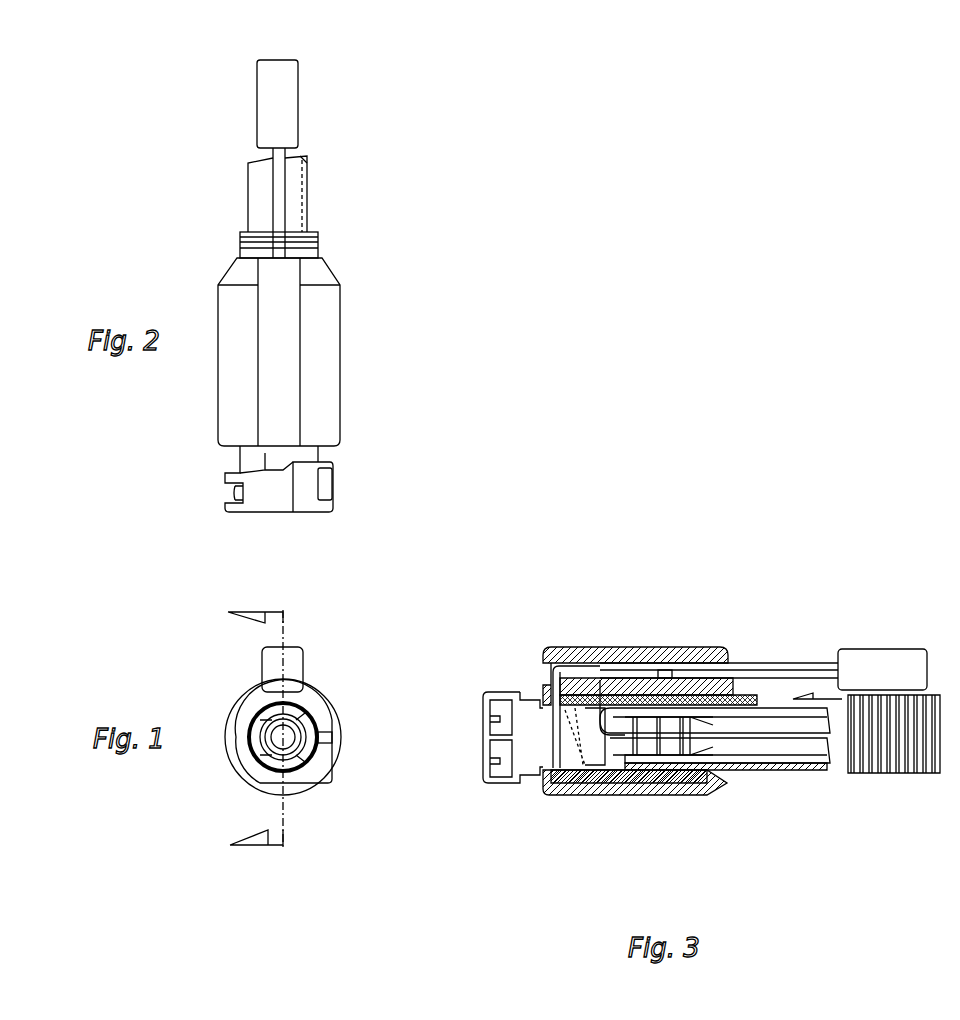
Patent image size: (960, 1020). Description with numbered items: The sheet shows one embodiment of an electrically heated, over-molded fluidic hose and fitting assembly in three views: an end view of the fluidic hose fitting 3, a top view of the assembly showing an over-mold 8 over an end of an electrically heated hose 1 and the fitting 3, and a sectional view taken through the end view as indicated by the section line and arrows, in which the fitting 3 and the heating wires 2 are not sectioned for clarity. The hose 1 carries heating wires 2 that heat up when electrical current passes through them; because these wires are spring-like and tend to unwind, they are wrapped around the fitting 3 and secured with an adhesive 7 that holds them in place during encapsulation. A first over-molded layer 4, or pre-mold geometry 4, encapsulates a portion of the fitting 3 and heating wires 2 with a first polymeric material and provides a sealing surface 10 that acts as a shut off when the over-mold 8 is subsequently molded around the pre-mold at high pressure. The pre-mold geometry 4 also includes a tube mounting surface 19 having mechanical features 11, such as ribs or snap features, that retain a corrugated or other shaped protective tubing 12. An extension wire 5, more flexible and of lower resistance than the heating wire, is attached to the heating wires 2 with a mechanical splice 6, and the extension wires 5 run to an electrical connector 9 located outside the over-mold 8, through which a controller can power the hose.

In FIG. 2, the electrically heated hose 1 is at (260, 212).
In FIG. 3, the electrically heated hose 1 is at (810, 772).
In FIG. 2, the heating wires 2 is at (300, 157).
In FIG. 3, the heating wires 2 is at (583, 795).
In FIG. 2, the fluidic hose fitting 3 is at (333, 486).
In FIG. 1, the fluidic hose fitting 3 is at (247, 703).
In FIG. 3, the fluidic hose fitting 3 is at (510, 690).
In FIG. 3, the first over-molded layer 4 is at (667, 795).
In FIG. 2, the extension wire 5 is at (277, 210).
In FIG. 3, the extension wire 5 is at (667, 680).
In FIG. 3, the mechanical splice 6 is at (592, 665).
In FIG. 3, the adhesive 7 is at (553, 795).
In FIG. 2, the over-mold 8 is at (327, 356).
In FIG. 1, the over-mold 8 is at (297, 672).
In FIG. 3, the over-mold 8 is at (560, 647).
In FIG. 2, the electrical connector 9 is at (283, 87).
In FIG. 3, the electrical connector 9 is at (850, 649).
In FIG. 2, the sealing surface 10 is at (318, 250).
In FIG. 3, the sealing surface 10 is at (750, 775).
In FIG. 2, the mechanical features 11 is at (240, 250).
In FIG. 3, the mechanical features 11 is at (760, 775).
In FIG. 3, the protective tubing 12 is at (883, 773).
In FIG. 3, the tube mounting surface 19 is at (750, 695).